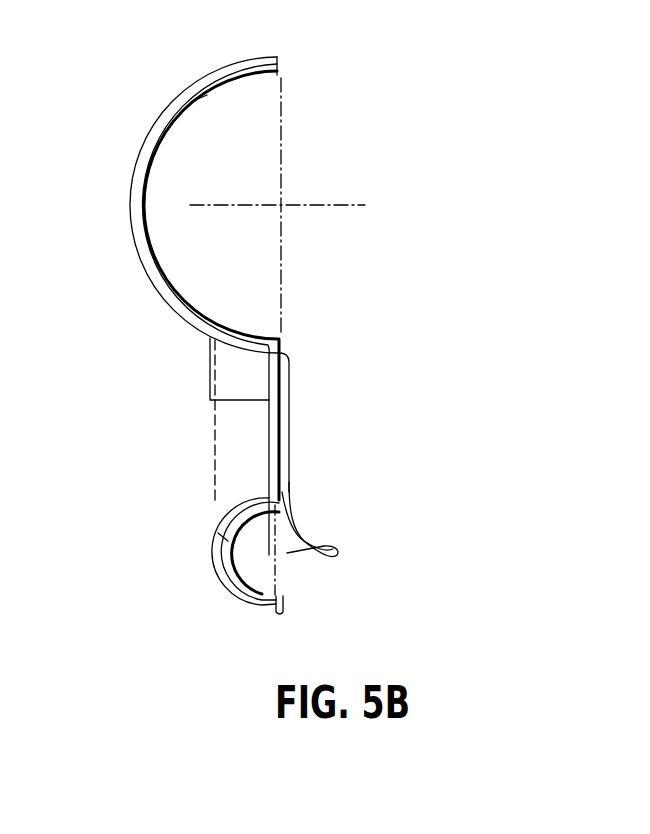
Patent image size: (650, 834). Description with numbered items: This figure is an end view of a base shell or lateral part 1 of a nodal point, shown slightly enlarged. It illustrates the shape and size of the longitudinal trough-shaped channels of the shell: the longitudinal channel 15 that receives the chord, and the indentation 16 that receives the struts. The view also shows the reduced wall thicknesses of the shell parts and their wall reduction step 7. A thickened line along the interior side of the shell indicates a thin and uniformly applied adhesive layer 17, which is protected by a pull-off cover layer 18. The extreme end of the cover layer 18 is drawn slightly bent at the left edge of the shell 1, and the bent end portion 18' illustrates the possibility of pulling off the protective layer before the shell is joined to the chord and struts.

The base shell 1 is at (389, 103).
The wall reduction step 7 is at (237, 400).
The longitudinal channel for the chord 15 is at (148, 270).
The indentation for the struts 16 is at (244, 596).
The adhesive layer 17 is at (200, 98).
The pull-off cover layer 18 is at (211, 285).
The outwardly bent tab 18' is at (329, 519).